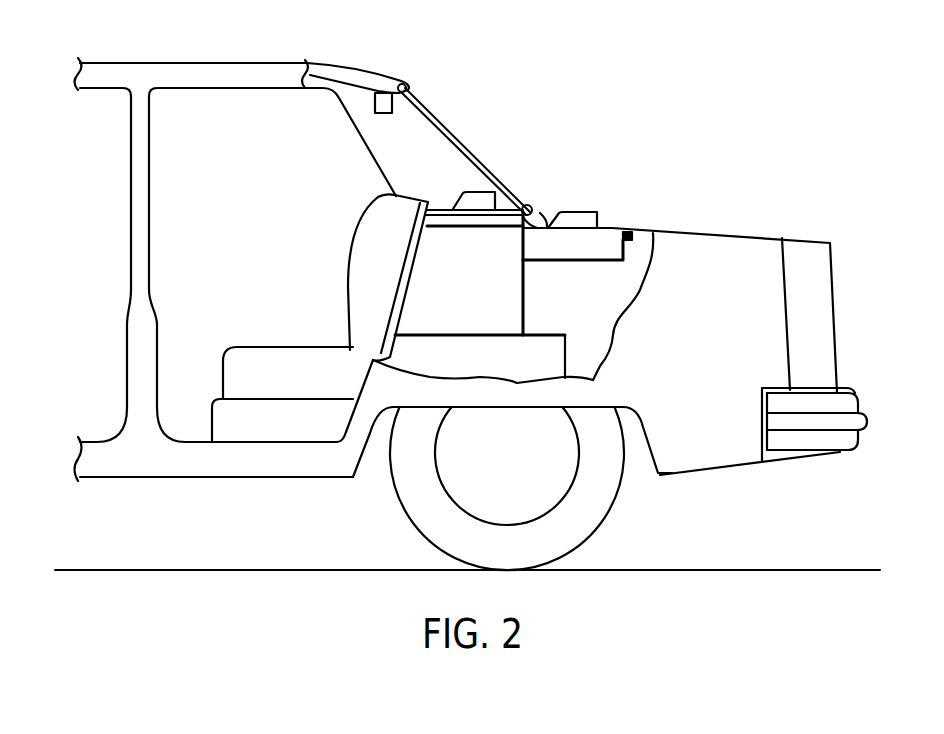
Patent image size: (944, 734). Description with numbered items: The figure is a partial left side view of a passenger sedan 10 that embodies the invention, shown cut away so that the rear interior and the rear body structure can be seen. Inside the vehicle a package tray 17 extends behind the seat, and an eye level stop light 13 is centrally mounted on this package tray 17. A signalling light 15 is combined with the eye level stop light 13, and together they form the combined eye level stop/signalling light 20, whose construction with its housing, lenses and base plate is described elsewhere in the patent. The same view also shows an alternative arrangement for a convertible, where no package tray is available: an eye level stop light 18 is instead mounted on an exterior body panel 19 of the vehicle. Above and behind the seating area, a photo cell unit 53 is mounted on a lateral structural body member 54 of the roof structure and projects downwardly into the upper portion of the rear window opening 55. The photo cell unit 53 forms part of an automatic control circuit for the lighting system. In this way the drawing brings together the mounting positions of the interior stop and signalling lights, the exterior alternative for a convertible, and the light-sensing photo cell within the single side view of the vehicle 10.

The passenger sedan 10 is at (236, 63).
The eye level stop light 13 is at (487, 193).
The signalling light 15 is at (520, 204).
The package tray 17 is at (440, 208).
The eye level stop light for a convertible 18 is at (588, 211).
The exterior body panel 19 is at (614, 229).
The combined eye level stop/signalling light 20 is at (468, 192).
The photo cell unit 53 is at (374, 106).
The lateral structural body member 54 is at (377, 78).
The rear window opening 55 is at (434, 113).